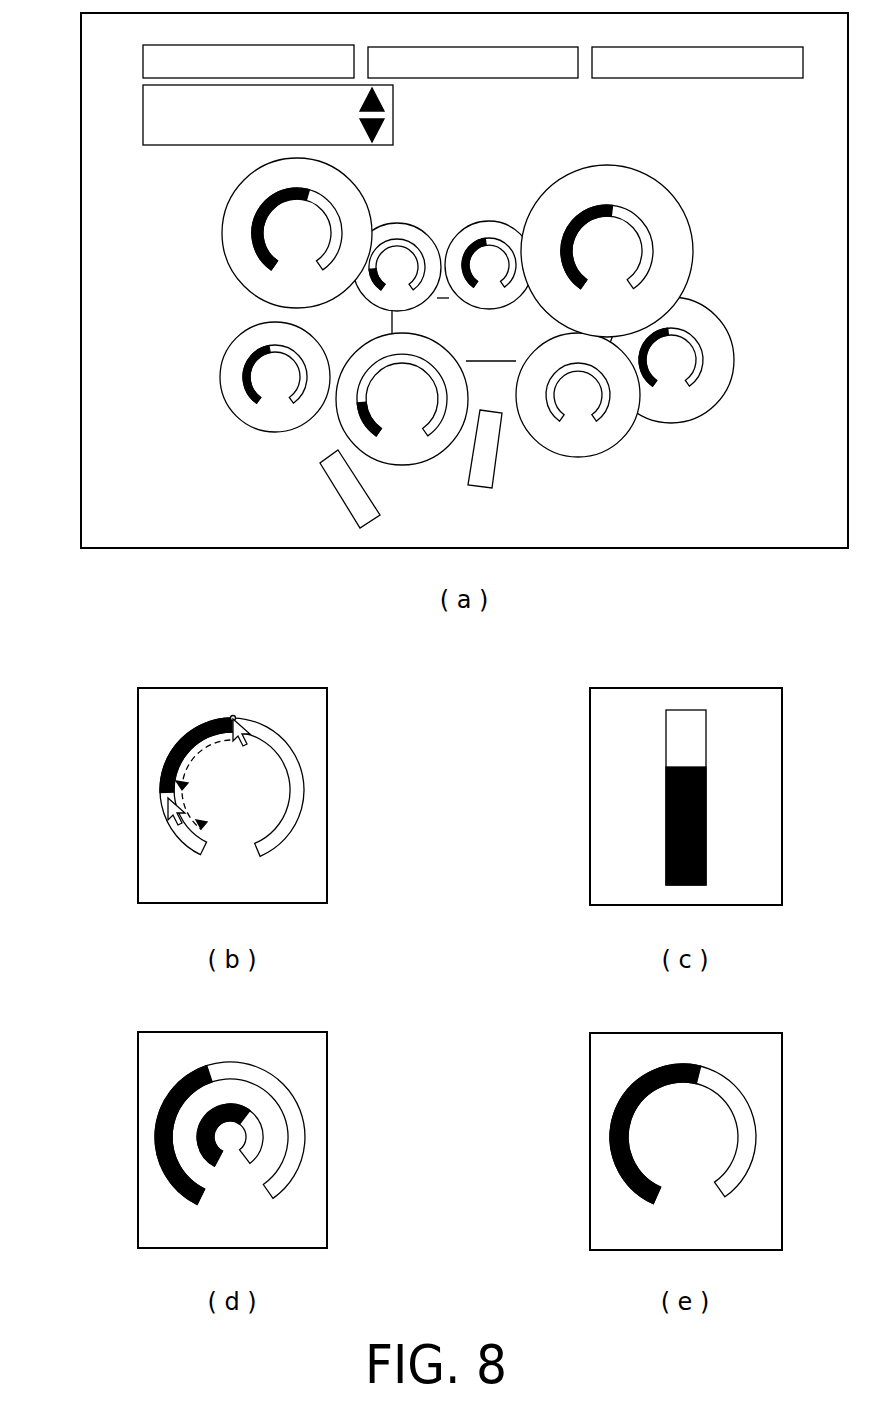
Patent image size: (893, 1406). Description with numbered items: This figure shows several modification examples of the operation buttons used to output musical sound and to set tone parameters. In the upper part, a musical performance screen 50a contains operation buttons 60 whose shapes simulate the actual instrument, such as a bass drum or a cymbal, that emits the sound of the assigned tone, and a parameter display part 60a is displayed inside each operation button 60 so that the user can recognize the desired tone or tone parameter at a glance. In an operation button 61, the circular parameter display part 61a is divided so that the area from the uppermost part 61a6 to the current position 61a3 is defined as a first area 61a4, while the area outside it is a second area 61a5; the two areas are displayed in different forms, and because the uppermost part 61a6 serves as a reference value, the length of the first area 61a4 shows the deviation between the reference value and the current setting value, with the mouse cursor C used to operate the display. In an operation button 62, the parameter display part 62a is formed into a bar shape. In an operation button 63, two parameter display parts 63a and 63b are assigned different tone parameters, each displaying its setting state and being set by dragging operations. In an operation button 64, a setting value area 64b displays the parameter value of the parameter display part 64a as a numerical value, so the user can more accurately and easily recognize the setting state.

The musical performance screen 50a is at (108, 52).
The operation button 60 is at (472, 333).
The parameter display part 60a is at (263, 267).
The operation button 61 is at (228, 766).
The parameter display part 61a is at (228, 752).
The current position 61a3 is at (160, 802).
The first area 61a4 is at (165, 760).
The second area 61a5 is at (287, 763).
The uppermost part 61a6 is at (233, 717).
The mouse cursor C is at (247, 758).
The operation button 62 is at (720, 769).
The parameter display part 62a is at (707, 823).
The operation button 63 is at (261, 1113).
The parameter display part 63a is at (288, 1115).
The parameter display part 63b is at (245, 1163).
The operation button 64 is at (657, 1115).
The parameter display part 64a is at (642, 1077).
The setting value area 64b is at (685, 1195).